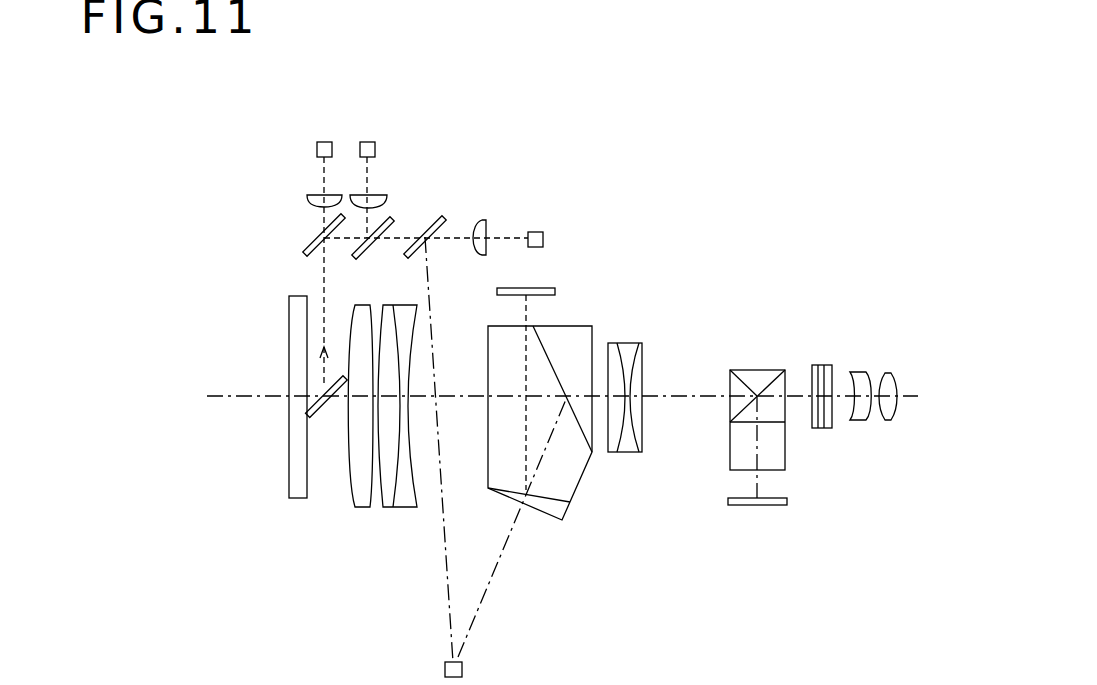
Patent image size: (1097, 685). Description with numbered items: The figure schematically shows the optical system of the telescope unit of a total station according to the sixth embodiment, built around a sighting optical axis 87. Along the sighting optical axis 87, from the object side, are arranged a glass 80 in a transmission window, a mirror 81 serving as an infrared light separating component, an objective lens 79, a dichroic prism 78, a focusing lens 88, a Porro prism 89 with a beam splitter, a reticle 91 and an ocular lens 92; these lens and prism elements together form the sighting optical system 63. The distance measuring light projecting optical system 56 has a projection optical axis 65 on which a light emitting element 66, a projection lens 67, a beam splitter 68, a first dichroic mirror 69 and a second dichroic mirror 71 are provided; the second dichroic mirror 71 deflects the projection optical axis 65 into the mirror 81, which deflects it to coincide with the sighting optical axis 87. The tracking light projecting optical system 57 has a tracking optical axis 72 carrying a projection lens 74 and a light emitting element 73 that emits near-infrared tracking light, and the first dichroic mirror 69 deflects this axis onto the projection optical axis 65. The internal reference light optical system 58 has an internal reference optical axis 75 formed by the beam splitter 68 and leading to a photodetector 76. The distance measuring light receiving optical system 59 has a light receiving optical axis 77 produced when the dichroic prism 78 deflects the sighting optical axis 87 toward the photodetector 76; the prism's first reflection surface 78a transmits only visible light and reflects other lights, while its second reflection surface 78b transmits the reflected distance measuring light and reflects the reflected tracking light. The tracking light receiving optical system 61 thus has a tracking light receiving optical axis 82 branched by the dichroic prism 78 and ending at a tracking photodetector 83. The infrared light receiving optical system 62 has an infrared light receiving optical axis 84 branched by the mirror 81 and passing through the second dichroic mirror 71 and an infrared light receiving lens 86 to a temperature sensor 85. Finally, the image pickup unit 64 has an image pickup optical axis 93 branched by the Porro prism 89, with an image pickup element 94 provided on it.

The distance measuring light projecting optical system 56 is at (570, 203).
The tracking light projecting optical system 57 is at (391, 132).
The internal reference light optical system 58 is at (393, 449).
The distance measuring light receiving optical system 59 is at (551, 408).
The tracking light receiving optical system 61 is at (585, 325).
The infrared light receiving optical system 62 is at (293, 139).
The sighting optical system 63 is at (888, 397).
The image pickup unit 64 is at (753, 548).
The projection optical axis 65 is at (507, 236).
The light emitting element 66 is at (537, 232).
The projection lens 67 is at (480, 220).
The beam splitter 68 is at (428, 222).
The first dichroic mirror 69 is at (368, 247).
The second dichroic mirror 71 is at (313, 239).
The tracking optical axis 72 is at (366, 172).
The light emitting element 73 is at (376, 149).
The projection lens 74 is at (382, 196).
The internal reference optical axis 75 is at (434, 312).
The photodetector 76 is at (445, 670).
The light receiving optical axis 77 is at (503, 557).
The dichroic prism 78 is at (543, 379).
The first reflection surface 78a is at (550, 364).
The second reflection surface 78b is at (547, 494).
The objective lens 79 is at (375, 509).
The glass 80 is at (288, 434).
The mirror 81 is at (328, 418).
The tracking light receiving optical axis 82 is at (528, 315).
The tracking photodetector 83 is at (545, 289).
The infrared light receiving optical axis 84 is at (322, 172).
The temperature sensor 85 is at (316, 149).
The infrared light receiving lens 86 is at (306, 201).
The sighting optical axis 87 is at (240, 395).
The focusing lens 88 is at (628, 343).
The Porro prism with a beam splitter 89 is at (730, 428).
The reticle 91 is at (814, 366).
The ocular lens 92 is at (867, 368).
The image pickup optical axis 93 is at (758, 484).
The image pickup element 94 is at (745, 507).